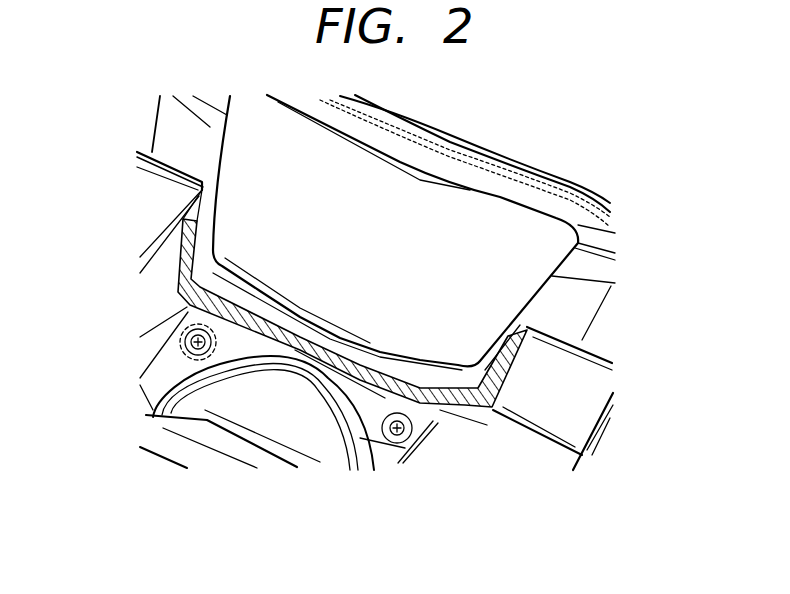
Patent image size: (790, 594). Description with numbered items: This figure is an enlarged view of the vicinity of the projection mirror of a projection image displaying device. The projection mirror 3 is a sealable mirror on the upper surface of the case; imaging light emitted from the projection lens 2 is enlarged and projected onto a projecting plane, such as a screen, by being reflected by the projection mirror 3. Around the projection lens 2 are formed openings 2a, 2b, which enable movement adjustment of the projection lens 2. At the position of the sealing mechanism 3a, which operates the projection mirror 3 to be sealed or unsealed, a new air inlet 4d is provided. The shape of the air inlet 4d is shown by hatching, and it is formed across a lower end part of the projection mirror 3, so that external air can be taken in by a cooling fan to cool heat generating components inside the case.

The projection lens 2 is at (287, 418).
The opening 2a is at (157, 418).
The opening 2b is at (186, 341).
The projection mirror 3 is at (462, 217).
The sealing mechanism 3a is at (567, 387).
The air inlet 4d is at (173, 263).